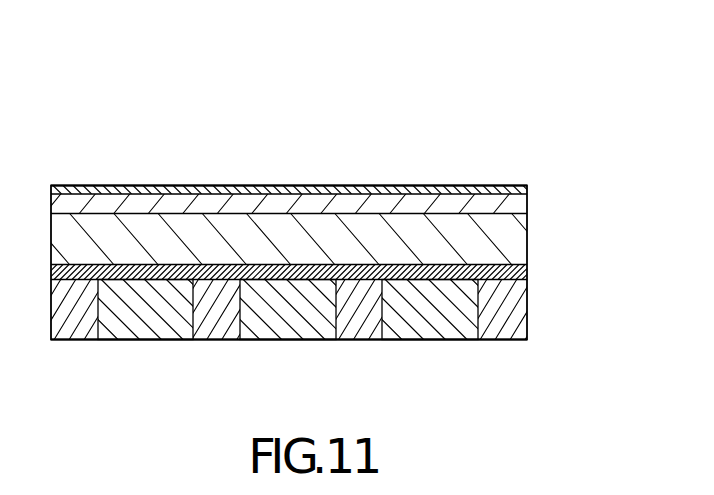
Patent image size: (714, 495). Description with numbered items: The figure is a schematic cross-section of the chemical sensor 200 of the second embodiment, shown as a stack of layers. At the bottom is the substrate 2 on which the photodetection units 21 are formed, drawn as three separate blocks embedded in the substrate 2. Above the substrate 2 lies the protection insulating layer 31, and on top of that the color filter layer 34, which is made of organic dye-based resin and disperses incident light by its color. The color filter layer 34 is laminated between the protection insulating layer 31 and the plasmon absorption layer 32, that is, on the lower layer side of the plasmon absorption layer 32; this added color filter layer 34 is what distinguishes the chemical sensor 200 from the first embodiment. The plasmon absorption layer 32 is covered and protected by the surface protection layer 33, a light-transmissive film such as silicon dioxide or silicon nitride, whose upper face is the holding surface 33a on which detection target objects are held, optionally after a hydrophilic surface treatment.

The chemical sensor 200 is at (535, 87).
The surface protection layer 33 is at (527, 186).
The holding surface 33a is at (235, 184).
The plasmon absorption layer 32 is at (523, 200).
The color filter layer 34 is at (523, 239).
The protection insulating layer 31 is at (523, 276).
The substrate 2 is at (523, 311).
The photodetection units 21 is at (143, 340).